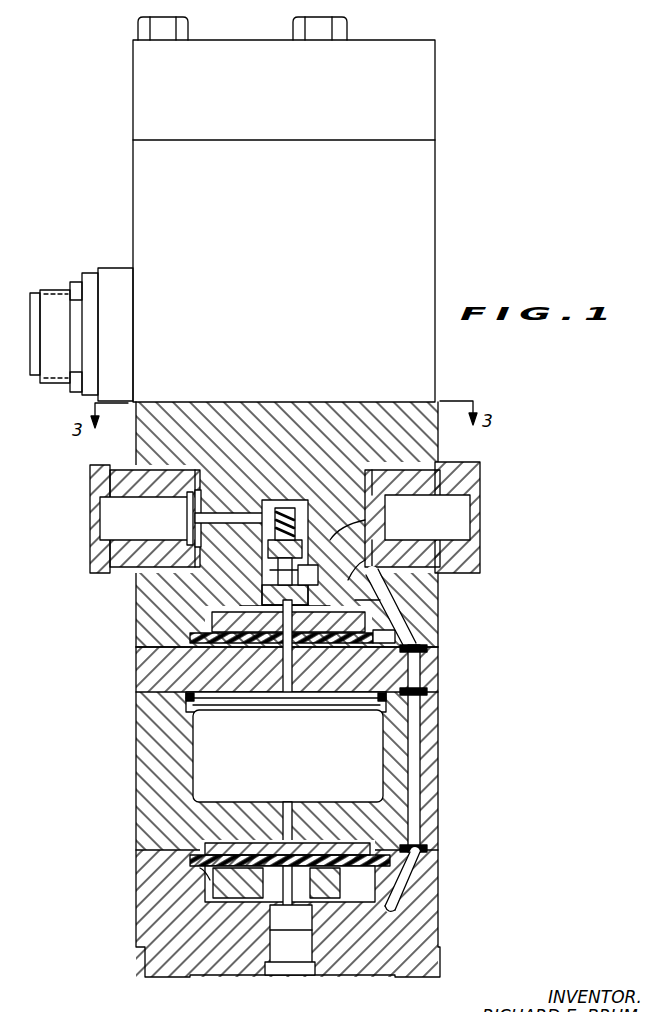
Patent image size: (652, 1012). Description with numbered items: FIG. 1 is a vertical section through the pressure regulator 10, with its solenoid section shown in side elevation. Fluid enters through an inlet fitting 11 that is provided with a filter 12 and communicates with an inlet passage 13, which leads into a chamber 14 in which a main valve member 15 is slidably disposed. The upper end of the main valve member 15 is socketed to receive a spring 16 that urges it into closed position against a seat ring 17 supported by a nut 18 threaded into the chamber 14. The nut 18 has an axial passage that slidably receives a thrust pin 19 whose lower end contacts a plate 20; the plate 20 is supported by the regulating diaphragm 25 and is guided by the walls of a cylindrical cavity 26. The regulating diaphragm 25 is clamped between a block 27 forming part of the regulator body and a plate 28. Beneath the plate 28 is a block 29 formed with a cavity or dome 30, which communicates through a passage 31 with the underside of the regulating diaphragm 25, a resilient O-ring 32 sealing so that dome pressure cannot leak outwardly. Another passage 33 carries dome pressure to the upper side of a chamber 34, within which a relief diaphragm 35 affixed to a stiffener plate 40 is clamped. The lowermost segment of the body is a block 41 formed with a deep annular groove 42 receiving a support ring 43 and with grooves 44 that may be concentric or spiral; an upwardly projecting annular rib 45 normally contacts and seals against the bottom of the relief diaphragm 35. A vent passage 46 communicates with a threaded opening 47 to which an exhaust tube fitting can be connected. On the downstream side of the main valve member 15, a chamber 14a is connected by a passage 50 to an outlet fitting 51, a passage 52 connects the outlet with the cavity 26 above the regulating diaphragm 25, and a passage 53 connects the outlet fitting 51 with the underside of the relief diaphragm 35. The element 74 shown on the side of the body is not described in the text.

The pressure regulator 10 is at (522, 400).
The inlet fitting 11 is at (100, 550).
The filter 12 is at (188, 516).
The inlet passage 13 is at (217, 513).
The chamber 14 is at (303, 545).
The chamber 14a is at (262, 582).
The main valve member 15 is at (258, 527).
The spring 16 is at (290, 508).
The seat ring 17 is at (262, 572).
The nut 18 is at (400, 590).
The thrust pin 19 is at (270, 592).
The plate 20 is at (200, 628).
The regulating diaphragm 25 is at (392, 638).
The cylindrical cavity 26 is at (410, 613).
The block 27 is at (428, 646).
The plate 28 is at (440, 677).
The block 29 is at (440, 760).
The dome 30 is at (380, 737).
The passage 31 is at (287, 700).
The O-ring 32 is at (226, 705).
The passage 33 is at (292, 852).
The chamber 34 is at (320, 852).
The relief diaphragm 35 is at (200, 866).
The stiffener plate 40 is at (247, 855).
The block 41 is at (442, 889).
The annular groove 42 is at (250, 885).
The support ring 43 is at (330, 885).
The grooves 44 is at (205, 868).
The annular rib 45 is at (285, 870).
The vent passage 46 is at (291, 935).
The threaded opening 47 is at (300, 955).
The passage 50 is at (333, 538).
The outlet fitting 51 is at (453, 468).
The passage 52 is at (372, 575).
The passage 53 is at (420, 722).
The adjusting knob 74 is at (55, 290).